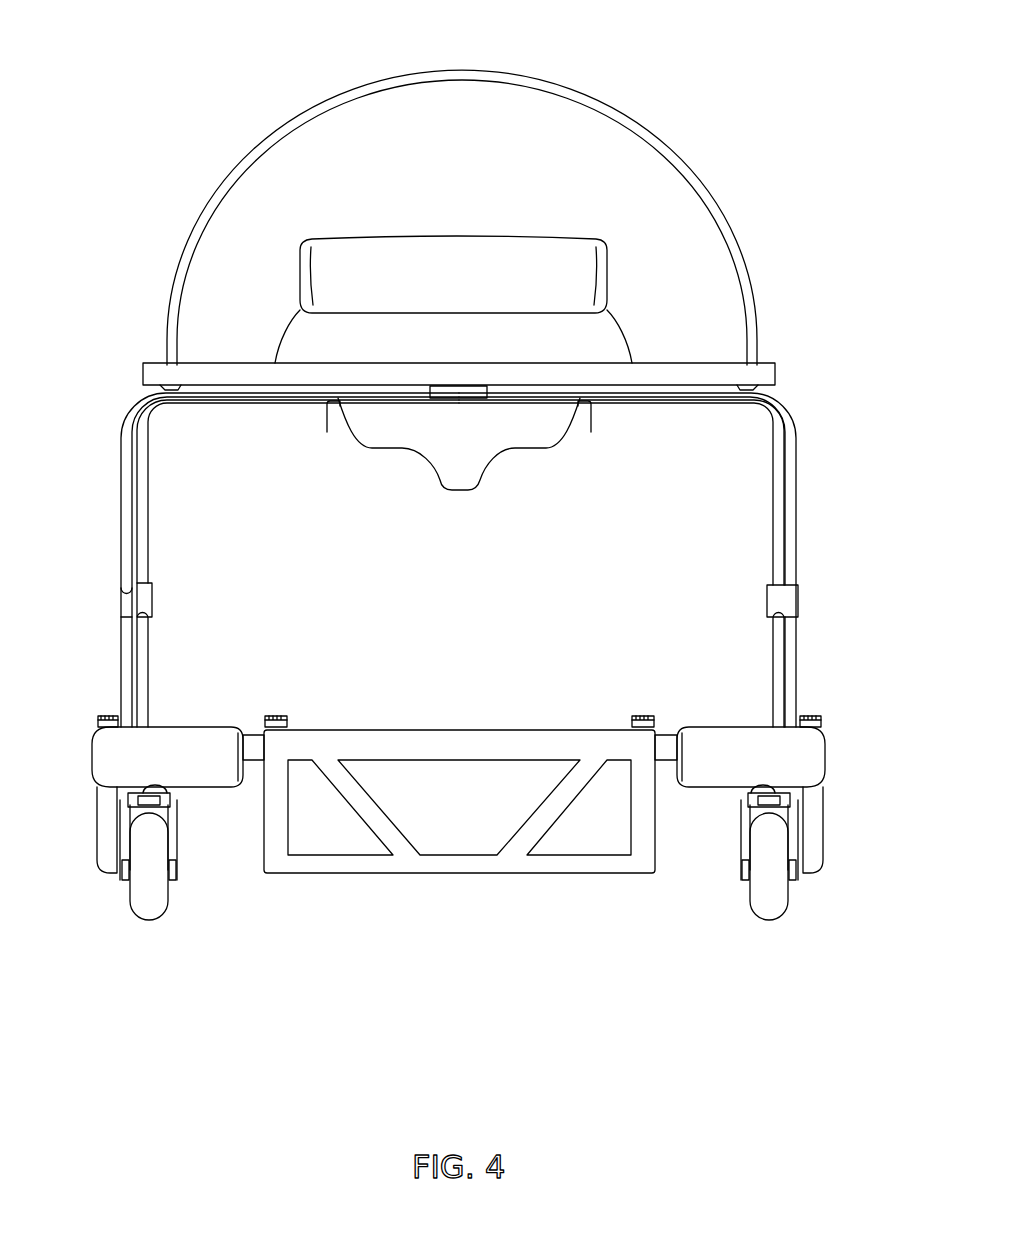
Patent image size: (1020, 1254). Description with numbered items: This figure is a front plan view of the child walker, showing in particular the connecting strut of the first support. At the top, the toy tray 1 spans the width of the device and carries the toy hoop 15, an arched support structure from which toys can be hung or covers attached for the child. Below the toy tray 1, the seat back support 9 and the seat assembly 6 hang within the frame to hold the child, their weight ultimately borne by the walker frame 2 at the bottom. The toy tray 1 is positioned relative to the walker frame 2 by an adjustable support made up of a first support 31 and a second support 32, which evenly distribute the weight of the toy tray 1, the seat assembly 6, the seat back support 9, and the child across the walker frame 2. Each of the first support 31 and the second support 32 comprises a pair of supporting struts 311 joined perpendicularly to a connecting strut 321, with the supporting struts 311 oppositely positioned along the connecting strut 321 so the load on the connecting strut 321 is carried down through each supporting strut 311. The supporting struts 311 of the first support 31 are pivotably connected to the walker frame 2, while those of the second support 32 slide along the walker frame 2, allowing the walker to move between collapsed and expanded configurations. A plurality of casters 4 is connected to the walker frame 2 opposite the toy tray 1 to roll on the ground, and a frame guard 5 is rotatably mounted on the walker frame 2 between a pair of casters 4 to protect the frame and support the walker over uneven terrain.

The toy tray 1 is at (142, 379).
The walker frame 2 is at (818, 742).
The plurality of casters 4 is at (147, 918).
The plurality of frame guards 5 is at (460, 875).
The seat assembly 6 is at (466, 438).
The seat back support 9 is at (466, 281).
The toy hoop 15 is at (481, 64).
The first support 31 is at (802, 562).
The second support 32 is at (155, 567).
The pair of supporting struts 311 is at (127, 658).
The connecting strut 321 is at (791, 493).